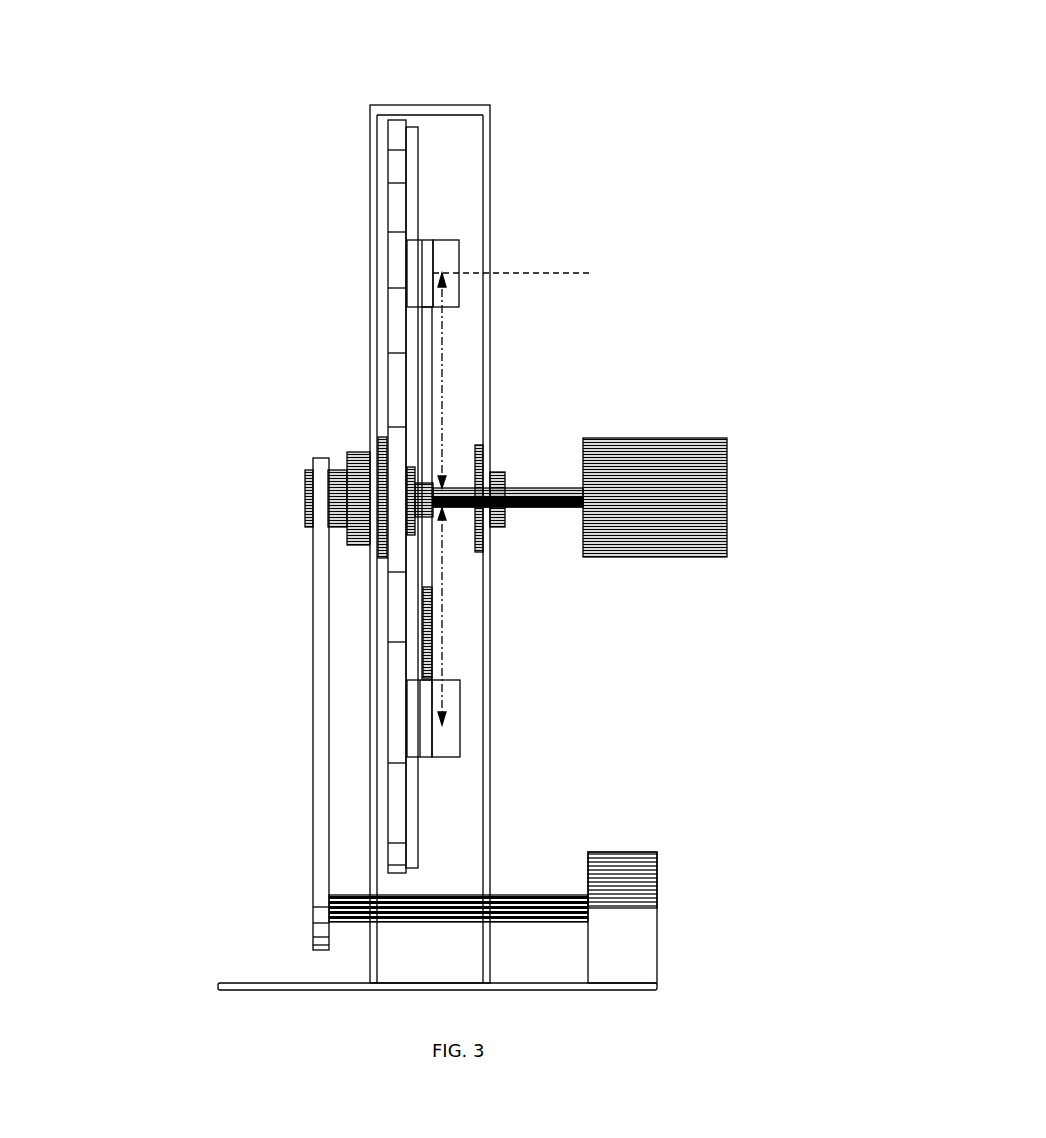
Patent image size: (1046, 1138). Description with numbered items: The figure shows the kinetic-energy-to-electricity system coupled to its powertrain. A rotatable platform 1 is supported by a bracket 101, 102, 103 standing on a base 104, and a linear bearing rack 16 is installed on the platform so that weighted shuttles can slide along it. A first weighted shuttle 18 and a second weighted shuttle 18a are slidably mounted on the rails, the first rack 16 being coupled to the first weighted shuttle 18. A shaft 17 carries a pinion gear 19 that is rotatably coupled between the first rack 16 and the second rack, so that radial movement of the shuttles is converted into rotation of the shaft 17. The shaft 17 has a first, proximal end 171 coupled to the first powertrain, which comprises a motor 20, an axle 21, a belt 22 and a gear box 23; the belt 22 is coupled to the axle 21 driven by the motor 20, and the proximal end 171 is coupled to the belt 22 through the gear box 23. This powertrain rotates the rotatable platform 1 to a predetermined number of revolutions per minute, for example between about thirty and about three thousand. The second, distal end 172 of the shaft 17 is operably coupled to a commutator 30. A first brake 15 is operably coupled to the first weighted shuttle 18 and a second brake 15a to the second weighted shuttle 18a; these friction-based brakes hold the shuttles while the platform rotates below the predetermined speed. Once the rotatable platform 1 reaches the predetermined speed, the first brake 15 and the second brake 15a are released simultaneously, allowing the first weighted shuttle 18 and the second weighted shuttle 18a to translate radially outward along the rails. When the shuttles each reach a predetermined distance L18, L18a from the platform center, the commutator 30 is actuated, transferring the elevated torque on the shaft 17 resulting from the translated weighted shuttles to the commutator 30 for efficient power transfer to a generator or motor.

The rotatable platform 1 is at (418, 181).
The first brake 15 is at (408, 275).
The second brake 15a is at (413, 709).
The first rack 16 is at (433, 386).
The shaft 17 is at (596, 564).
The first weighted shuttle 18 is at (433, 272).
The second weighted shuttle 18a is at (443, 708).
The pinion gear 19 is at (412, 470).
The motor 20 is at (615, 852).
The axle 21 is at (343, 898).
The belt 22 is at (320, 620).
The gear box 23 is at (310, 492).
The commutator 30 is at (655, 497).
The bracket 101 is at (493, 272).
The bracket 102 is at (437, 102).
The bracket 103 is at (367, 128).
The base 104 is at (258, 983).
The first proximal end of shaft 171 is at (288, 493).
The second distal end of shaft 172 is at (577, 482).
The predetermined distance of first weighted shuttle L18 is at (455, 362).
The predetermined distance of second weighted shuttle L18a is at (442, 612).